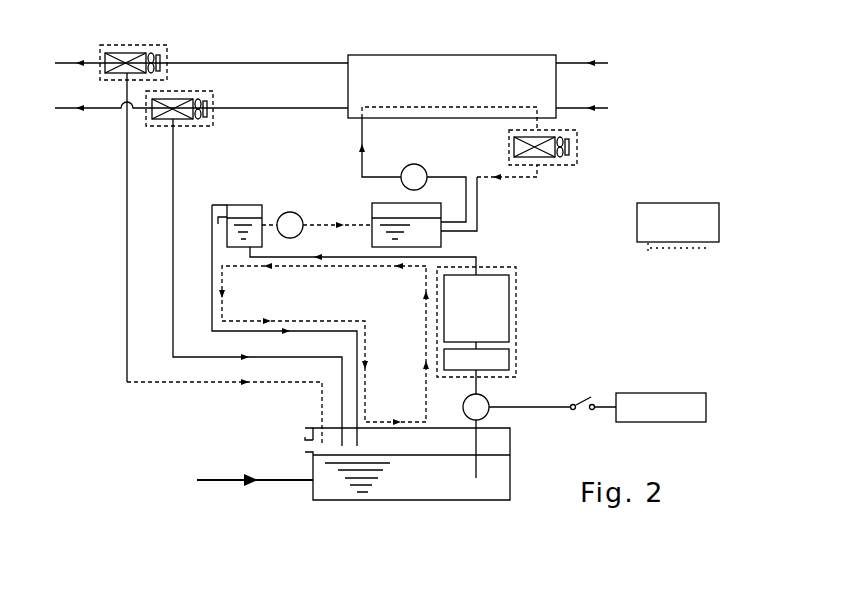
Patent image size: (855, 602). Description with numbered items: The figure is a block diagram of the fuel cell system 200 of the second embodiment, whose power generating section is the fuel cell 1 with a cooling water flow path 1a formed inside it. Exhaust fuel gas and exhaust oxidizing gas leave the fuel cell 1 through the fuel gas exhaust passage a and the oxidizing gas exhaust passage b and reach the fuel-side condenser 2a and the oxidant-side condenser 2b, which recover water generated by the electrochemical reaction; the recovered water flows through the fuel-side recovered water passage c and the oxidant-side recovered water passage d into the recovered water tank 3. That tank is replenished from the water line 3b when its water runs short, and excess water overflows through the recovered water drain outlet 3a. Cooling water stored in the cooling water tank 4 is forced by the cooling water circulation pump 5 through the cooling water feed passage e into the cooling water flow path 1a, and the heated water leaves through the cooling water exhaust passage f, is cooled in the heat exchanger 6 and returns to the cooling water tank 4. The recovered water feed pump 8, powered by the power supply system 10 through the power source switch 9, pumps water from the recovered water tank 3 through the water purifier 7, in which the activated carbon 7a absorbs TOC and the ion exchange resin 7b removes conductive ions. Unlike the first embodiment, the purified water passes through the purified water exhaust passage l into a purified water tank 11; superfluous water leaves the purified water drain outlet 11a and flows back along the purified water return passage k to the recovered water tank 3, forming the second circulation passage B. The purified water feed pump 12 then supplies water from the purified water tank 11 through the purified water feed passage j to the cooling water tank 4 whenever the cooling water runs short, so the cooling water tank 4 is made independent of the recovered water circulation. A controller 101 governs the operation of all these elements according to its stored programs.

The fuel cell system 200 is at (715, 76).
The fuel cell 1 is at (455, 122).
The cooling water flow path 1a is at (490, 122).
The fuel-side condenser 2a is at (213, 96).
The oxidant-side condenser 2b is at (167, 50).
The recovered water tank 3 is at (513, 443).
The recovered water drain outlet 3a is at (304, 436).
The water line 3b is at (268, 482).
The cooling water tank 4 is at (393, 203).
The cooling water circulation pump 5 is at (414, 163).
The heat exchanger 6 is at (578, 155).
The water purifier 7 is at (506, 323).
The activated carbon 7a is at (516, 362).
The ion exchange resin 7b is at (510, 310).
The recovered water feed pump 8 is at (487, 398).
The power source switch 9 is at (588, 396).
The power supply system 10 is at (708, 398).
The purified water tank 11 is at (243, 204).
The purified water drain outlet 11a is at (221, 203).
The purified water feed pump 12 is at (290, 212).
The controller 101 is at (724, 212).
The fuel gas exhaust passage a is at (300, 104).
The oxidizing gas exhaust passage b is at (300, 60).
The fuel-side recovered water passage c is at (171, 187).
The oxidant-side recovered water passage d is at (125, 187).
The cooling water feed passage e is at (360, 161).
The cooling water exhaust passage f is at (540, 181).
The purified water feed passage j is at (325, 224).
The purified water return passage k is at (211, 260).
The purified water exhaust passage l is at (480, 256).
The second circulation passage B is at (370, 339).